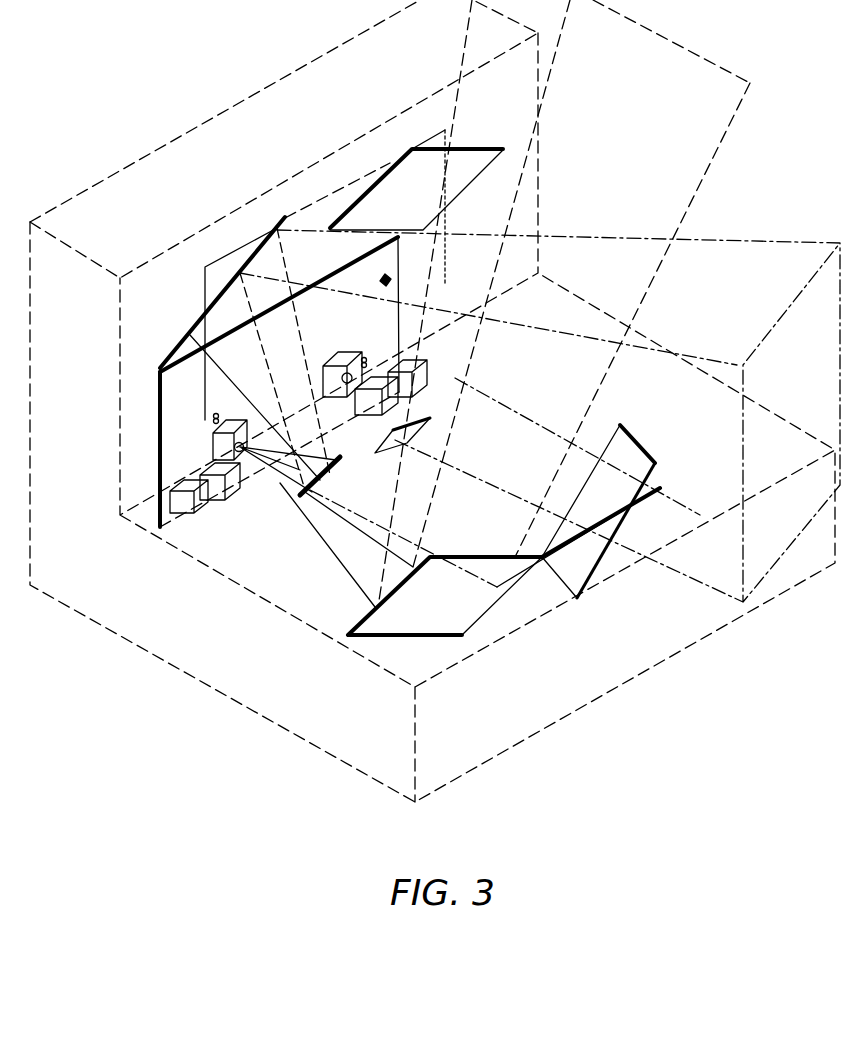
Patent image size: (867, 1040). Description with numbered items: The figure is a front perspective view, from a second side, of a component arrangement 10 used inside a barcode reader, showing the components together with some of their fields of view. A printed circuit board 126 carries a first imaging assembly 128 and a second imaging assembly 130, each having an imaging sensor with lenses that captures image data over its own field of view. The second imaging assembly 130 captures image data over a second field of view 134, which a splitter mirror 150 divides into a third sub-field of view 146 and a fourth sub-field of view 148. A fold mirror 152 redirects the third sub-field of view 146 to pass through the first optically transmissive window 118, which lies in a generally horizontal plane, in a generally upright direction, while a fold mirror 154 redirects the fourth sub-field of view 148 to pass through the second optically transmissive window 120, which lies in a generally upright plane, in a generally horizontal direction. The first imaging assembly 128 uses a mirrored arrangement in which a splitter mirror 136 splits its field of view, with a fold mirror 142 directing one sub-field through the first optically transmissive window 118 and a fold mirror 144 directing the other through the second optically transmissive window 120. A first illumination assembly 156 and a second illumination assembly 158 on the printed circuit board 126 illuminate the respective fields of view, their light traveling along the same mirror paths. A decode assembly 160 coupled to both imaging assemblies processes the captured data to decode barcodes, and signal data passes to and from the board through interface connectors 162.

The component arrangement 10 is at (211, 63).
The first optically transmissive window 118 is at (524, 410).
The second optically transmissive window 120 is at (347, 190).
The printed circuit board 126 is at (157, 390).
The first imaging assembly 128 is at (333, 357).
The second imaging assembly 130 is at (224, 500).
The second field of view 134 is at (281, 481).
The splitter mirror 136 is at (408, 426).
The fold mirror 142 is at (640, 441).
The fold mirror 144 is at (470, 150).
The third sub-field of view 146 is at (362, 570).
The fourth sub-field of view 148 is at (213, 440).
The splitter mirror 150 is at (337, 495).
The fold mirror 152 is at (490, 600).
The fold mirror 154 is at (203, 316).
The first illumination assembly 156 is at (368, 354).
The second illumination assembly 158 is at (178, 497).
The decode assembly 160 is at (392, 280).
The interface connectors 162 is at (188, 526).